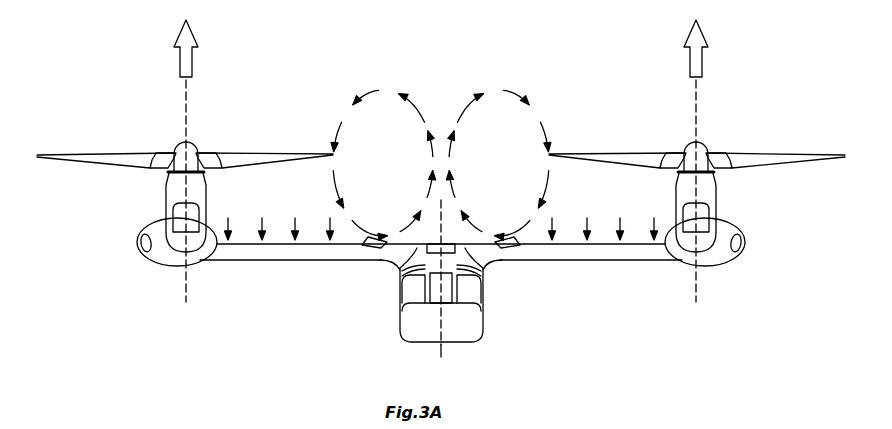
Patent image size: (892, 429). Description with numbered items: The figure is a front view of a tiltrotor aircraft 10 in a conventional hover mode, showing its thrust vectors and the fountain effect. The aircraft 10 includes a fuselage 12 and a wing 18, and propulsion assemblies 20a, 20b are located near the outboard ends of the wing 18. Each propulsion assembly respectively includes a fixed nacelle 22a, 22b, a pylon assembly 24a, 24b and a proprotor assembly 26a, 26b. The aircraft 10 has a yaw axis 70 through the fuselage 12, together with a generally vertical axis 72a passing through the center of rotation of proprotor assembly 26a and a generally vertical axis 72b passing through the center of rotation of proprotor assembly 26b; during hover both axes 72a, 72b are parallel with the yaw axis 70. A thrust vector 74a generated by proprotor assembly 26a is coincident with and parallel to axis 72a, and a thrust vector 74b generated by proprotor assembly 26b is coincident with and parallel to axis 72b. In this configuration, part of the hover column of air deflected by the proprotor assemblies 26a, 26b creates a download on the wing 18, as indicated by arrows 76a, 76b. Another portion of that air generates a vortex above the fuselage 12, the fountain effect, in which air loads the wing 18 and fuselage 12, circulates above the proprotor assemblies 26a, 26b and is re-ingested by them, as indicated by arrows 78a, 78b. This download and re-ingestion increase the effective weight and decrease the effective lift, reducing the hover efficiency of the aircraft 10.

The tiltrotor aircraft 10 is at (549, 79).
The fuselage 12 is at (483, 328).
The wing 18 is at (297, 262).
The propulsion assembly 20a is at (745, 255).
The propulsion assembly 20b is at (137, 255).
The fixed nacelle 22a is at (737, 226).
The fixed nacelle 22b is at (145, 226).
The pylon assembly 24a is at (714, 192).
The pylon assembly 24b is at (168, 192).
The proprotor assembly 26a is at (794, 152).
The proprotor assembly 26b is at (88, 152).
The yaw axis 70 is at (441, 352).
The generally vertical axis 72a is at (696, 296).
The generally vertical axis 72b is at (186, 292).
The thrust vector 74a is at (703, 60).
The thrust vector 74b is at (179, 60).
The arrows indicating download 76a is at (587, 217).
The arrows indicating download 76b is at (295, 217).
The arrows indicating fountain effect vortex 78a is at (510, 90).
The arrows indicating fountain effect vortex 78b is at (384, 90).